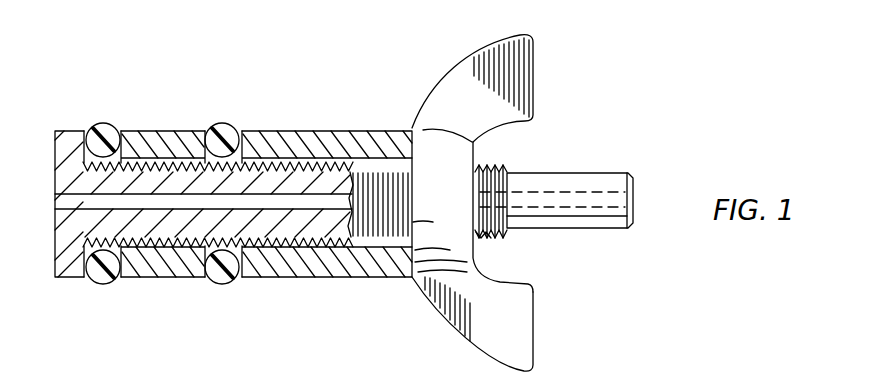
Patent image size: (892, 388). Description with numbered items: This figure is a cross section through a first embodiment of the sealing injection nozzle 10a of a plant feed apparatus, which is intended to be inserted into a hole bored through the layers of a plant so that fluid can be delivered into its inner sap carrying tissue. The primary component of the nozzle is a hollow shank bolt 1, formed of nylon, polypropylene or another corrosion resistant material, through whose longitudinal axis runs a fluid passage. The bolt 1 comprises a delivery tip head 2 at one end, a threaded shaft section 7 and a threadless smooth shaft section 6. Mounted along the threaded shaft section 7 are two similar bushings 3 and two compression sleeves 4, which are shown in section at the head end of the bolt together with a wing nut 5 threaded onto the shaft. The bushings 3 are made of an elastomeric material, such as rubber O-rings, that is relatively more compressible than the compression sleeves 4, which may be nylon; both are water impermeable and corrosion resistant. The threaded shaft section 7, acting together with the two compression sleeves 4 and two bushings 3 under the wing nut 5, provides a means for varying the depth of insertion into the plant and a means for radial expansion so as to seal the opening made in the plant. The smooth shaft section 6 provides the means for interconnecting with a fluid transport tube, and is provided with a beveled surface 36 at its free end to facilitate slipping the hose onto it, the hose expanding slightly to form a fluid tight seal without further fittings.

The sealing injection nozzle 10a is at (260, 93).
The hollow shank bolt 1 is at (510, 162).
The delivery tip head 2 is at (57, 262).
The bushings 3 is at (100, 122).
The compression sleeves 4 is at (66, 204).
The wing nut 5 is at (535, 313).
The smooth shaft section 6 is at (575, 180).
The threaded shaft section 7 is at (487, 238).
The beveled surface 36 is at (633, 172).